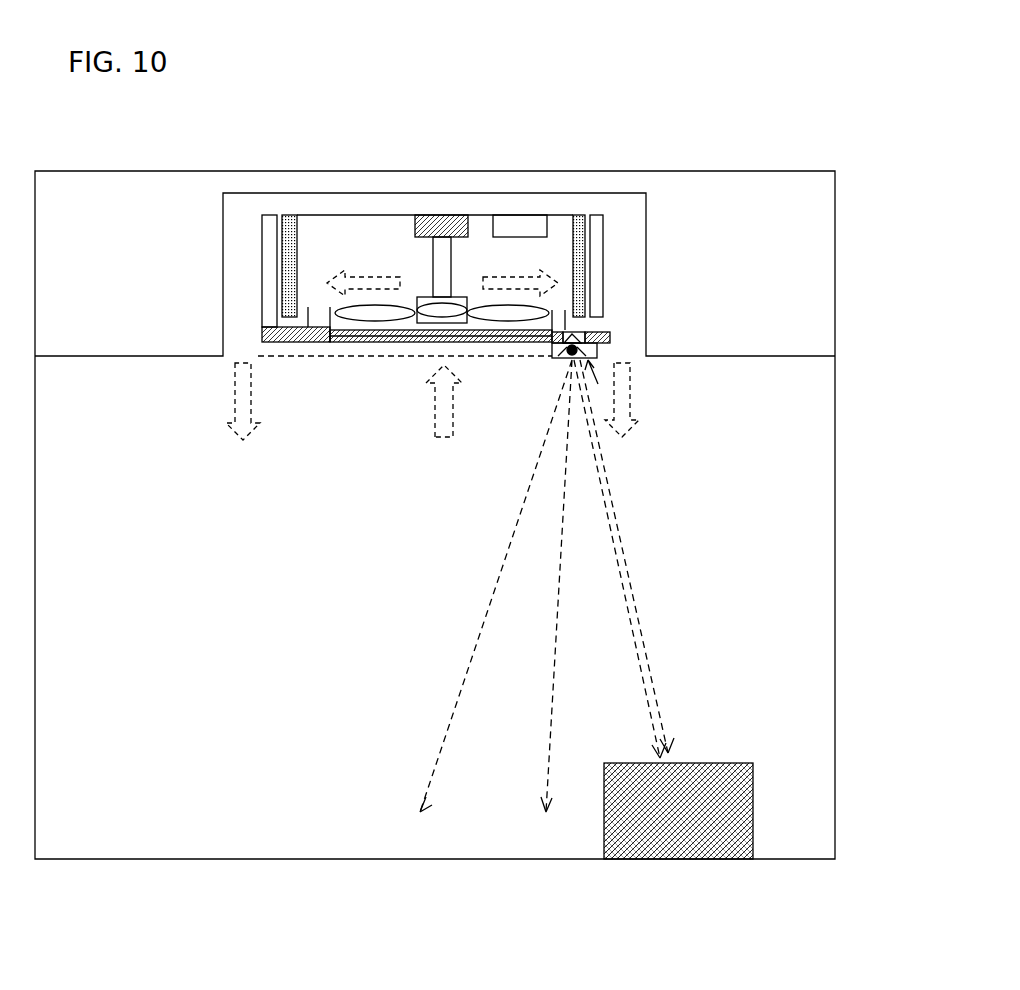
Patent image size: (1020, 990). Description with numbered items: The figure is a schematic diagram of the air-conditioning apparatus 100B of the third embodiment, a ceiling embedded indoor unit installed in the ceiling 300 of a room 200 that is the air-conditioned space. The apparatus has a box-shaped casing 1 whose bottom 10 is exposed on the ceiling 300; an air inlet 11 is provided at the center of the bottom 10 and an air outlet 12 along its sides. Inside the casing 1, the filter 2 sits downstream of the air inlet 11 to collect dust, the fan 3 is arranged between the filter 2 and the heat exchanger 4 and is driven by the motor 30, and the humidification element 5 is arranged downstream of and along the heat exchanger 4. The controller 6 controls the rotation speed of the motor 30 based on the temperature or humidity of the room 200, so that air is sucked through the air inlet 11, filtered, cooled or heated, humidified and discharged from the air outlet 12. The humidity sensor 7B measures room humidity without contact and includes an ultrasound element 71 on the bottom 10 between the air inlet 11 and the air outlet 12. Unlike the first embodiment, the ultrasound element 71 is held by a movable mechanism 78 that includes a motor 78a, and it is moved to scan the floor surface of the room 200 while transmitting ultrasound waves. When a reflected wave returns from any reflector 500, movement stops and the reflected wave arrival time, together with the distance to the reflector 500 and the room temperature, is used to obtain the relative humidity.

The casing 1 is at (648, 320).
The filter 2 is at (375, 343).
The fan 3 is at (343, 322).
The heat exchanger 4 is at (290, 213).
The humidification element 5 is at (270, 213).
The controller 6 is at (518, 213).
The humidity sensor 7B is at (552, 356).
The bottom 10 is at (296, 344).
The air inlet 11 is at (411, 357).
The air outlet 12 is at (228, 358).
The motor 30 is at (445, 213).
The ultrasound element 71 is at (575, 358).
The movable mechanism 78 is at (565, 348).
The motor 78a is at (592, 333).
The air-conditioning apparatus 100B is at (678, 255).
The room 200 is at (835, 507).
The ceiling 300 is at (718, 357).
The reflector 500 is at (703, 763).